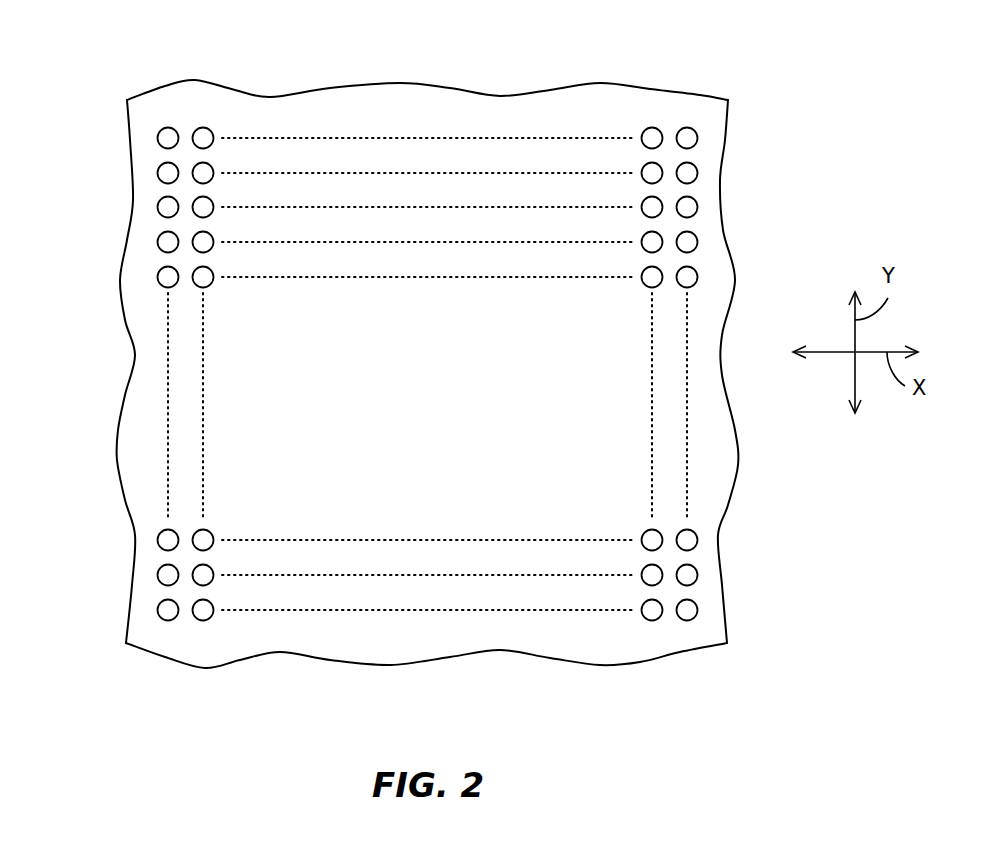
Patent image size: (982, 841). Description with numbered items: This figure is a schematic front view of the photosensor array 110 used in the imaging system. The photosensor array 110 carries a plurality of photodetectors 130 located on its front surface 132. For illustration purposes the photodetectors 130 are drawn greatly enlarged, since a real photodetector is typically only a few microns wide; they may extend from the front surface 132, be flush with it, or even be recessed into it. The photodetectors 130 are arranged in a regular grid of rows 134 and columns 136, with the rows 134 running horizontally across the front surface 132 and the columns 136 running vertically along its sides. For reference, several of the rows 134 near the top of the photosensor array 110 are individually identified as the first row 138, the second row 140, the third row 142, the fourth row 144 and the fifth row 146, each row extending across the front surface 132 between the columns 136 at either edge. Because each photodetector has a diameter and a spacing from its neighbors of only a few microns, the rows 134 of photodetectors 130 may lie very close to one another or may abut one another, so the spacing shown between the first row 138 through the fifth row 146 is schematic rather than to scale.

The photosensor array 110 is at (786, 76).
The photodetectors 130 is at (203, 127).
The front surface 132 is at (442, 408).
The rows 134 is at (722, 173).
The columns 136 is at (684, 90).
The first row 138 is at (128, 137).
The second row 140 is at (128, 171).
The third row 142 is at (128, 207).
The fourth row 144 is at (123, 241).
The fifth row 146 is at (130, 275).